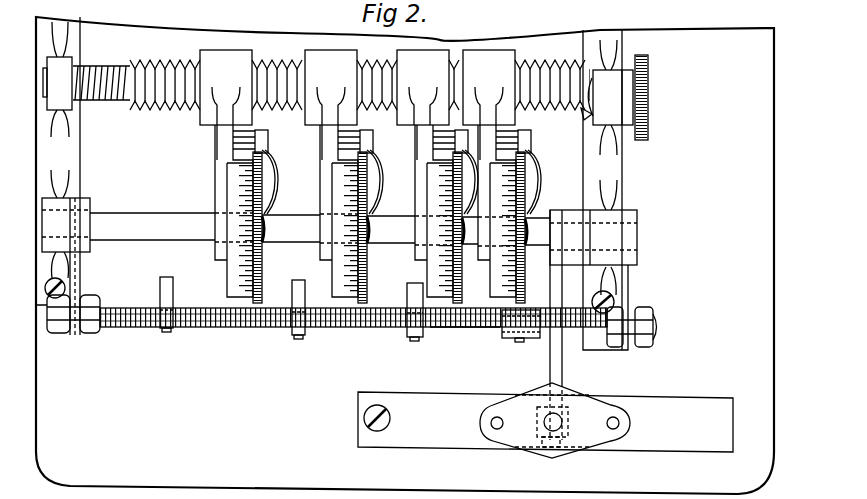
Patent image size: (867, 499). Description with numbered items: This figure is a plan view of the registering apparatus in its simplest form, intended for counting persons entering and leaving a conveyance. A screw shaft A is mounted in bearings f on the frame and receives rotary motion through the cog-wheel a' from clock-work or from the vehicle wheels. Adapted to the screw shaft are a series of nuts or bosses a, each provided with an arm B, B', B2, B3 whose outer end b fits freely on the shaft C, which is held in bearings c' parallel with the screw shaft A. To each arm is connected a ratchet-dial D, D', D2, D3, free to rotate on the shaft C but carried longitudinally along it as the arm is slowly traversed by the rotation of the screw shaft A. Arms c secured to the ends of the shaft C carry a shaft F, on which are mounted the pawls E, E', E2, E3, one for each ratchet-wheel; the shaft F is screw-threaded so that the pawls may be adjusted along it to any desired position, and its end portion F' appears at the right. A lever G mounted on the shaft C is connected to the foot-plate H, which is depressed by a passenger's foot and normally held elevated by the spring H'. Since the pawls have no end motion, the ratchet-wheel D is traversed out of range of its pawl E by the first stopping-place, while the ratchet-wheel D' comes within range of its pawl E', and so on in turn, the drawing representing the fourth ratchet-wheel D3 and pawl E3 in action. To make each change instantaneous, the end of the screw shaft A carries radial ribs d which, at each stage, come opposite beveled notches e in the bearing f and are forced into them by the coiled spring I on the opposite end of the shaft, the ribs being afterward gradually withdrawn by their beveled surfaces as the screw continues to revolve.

The screw shaft A is at (360, 85).
The nuts or bosses a is at (357, 87).
The cog-wheel a' is at (652, 97).
The arm B is at (244, 211).
The arm B' is at (346, 211).
The arm B2 is at (443, 211).
The arm B3 is at (508, 211).
The outer end of arm b is at (365, 230).
The shaft C is at (320, 229).
The arms c is at (344, 288).
The bearings c' is at (339, 231).
The ratchet-dial D is at (257, 227).
The ratchet-wheel D' is at (361, 227).
The ratchet-wheel D2 is at (456, 227).
The ratchet-wheel D3 is at (522, 227).
The pawl E is at (171, 304).
The pawl E' is at (304, 309).
The pawl E2 is at (407, 312).
The pawl E3 is at (521, 313).
The shaft F is at (352, 319).
The rod end F' is at (465, 337).
The lever G is at (551, 328).
The foot-plate H is at (555, 420).
The spring H' is at (545, 422).
The coiled spring I is at (101, 73).
The radial ribs or projections d is at (583, 115).
The beveled notches or slots e is at (594, 97).
The bearing f is at (338, 91).